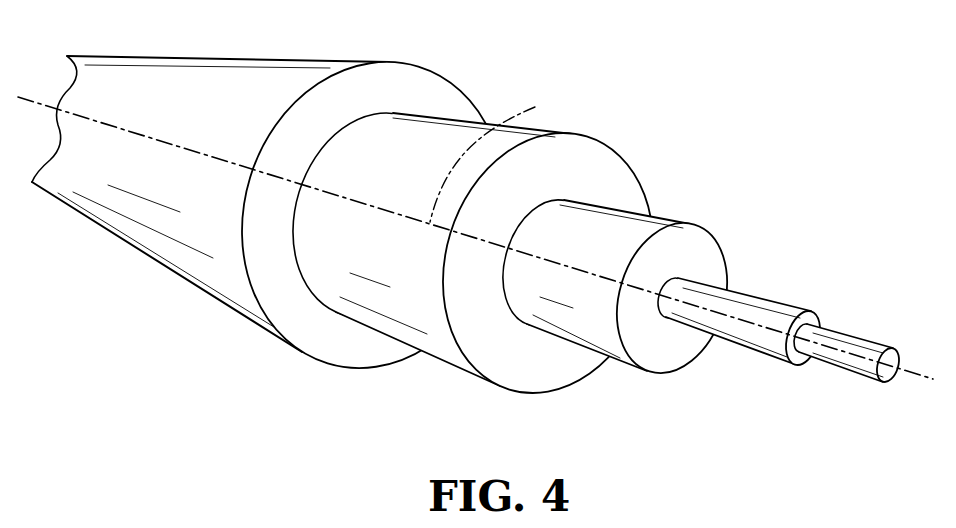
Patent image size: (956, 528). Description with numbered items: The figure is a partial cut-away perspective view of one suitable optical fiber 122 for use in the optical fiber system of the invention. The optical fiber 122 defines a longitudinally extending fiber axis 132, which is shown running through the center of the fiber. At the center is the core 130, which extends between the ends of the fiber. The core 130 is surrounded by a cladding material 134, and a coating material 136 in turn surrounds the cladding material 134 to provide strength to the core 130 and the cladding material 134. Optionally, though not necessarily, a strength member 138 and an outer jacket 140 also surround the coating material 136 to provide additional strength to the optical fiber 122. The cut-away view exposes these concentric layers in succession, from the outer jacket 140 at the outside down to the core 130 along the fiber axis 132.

The optical fiber 122 is at (205, 267).
The core 130 is at (855, 335).
The fiber axis 132 is at (535, 107).
The cladding material 134 is at (758, 298).
The coating material 136 is at (633, 222).
The strength member 138 is at (590, 170).
The outer jacket 140 is at (440, 97).